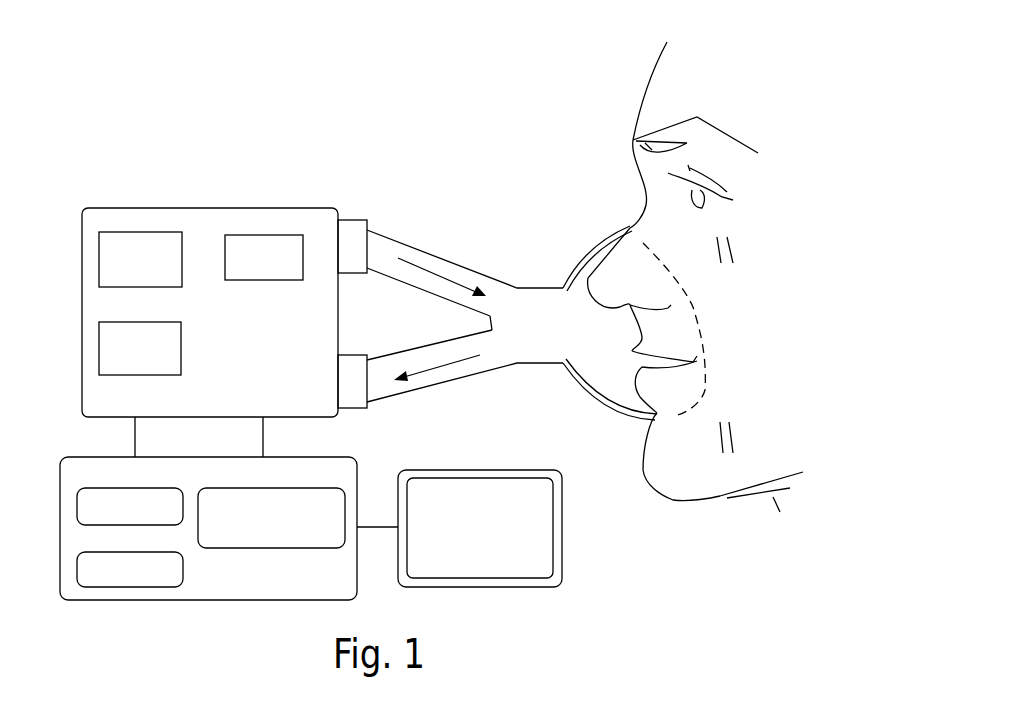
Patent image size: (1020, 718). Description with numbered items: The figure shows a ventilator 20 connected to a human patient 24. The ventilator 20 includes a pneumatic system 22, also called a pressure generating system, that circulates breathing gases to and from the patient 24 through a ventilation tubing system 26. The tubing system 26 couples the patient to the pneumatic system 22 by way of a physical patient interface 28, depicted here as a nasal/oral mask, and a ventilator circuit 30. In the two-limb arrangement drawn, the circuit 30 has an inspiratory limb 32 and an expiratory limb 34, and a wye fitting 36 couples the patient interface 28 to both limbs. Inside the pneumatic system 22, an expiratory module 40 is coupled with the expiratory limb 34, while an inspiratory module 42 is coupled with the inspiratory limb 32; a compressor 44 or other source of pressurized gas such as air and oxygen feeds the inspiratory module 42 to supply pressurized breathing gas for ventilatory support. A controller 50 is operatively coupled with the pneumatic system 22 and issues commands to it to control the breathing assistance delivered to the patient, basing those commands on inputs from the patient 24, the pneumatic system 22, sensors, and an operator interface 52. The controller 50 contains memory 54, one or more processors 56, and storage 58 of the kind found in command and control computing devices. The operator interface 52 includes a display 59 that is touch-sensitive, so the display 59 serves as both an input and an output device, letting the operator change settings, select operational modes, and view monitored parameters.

The ventilator 20 is at (455, 114).
The pneumatic system 22 is at (200, 207).
The human patient 24 is at (669, 277).
The ventilation tubing system 26 is at (541, 219).
The patient interface 28 is at (583, 243).
The ventilator circuit 30 is at (465, 307).
The inspiratory limb 32 is at (420, 289).
The expiratory limb 34 is at (430, 388).
The wye fitting 36 is at (489, 323).
The expiratory module 40 is at (151, 376).
The inspiratory module 42 is at (153, 288).
The compressor 44 is at (265, 281).
The controller 50 is at (229, 547).
The operator interface 52 is at (596, 622).
The memory 54 is at (131, 526).
The processor 56 is at (296, 549).
The storage 58 is at (183, 570).
The display 59 is at (475, 588).